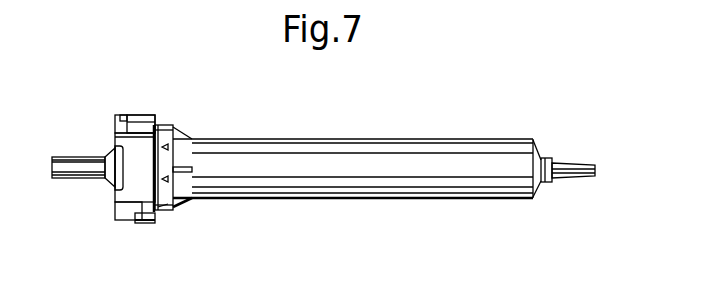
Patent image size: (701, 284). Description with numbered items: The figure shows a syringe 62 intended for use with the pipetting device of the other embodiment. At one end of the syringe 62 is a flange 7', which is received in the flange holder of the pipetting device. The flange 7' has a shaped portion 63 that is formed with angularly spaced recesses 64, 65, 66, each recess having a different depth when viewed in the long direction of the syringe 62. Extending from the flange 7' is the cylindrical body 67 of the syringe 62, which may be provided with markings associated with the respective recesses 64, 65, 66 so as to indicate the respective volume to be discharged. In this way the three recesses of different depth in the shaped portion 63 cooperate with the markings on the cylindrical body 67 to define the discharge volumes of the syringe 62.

The flange 7' is at (141, 102).
The syringe 62 is at (355, 143).
The shaped portion 63 is at (128, 192).
The recess 64 is at (118, 127).
The recess 65 is at (118, 175).
The recess 66 is at (140, 212).
The cylindrical body 67 is at (263, 152).